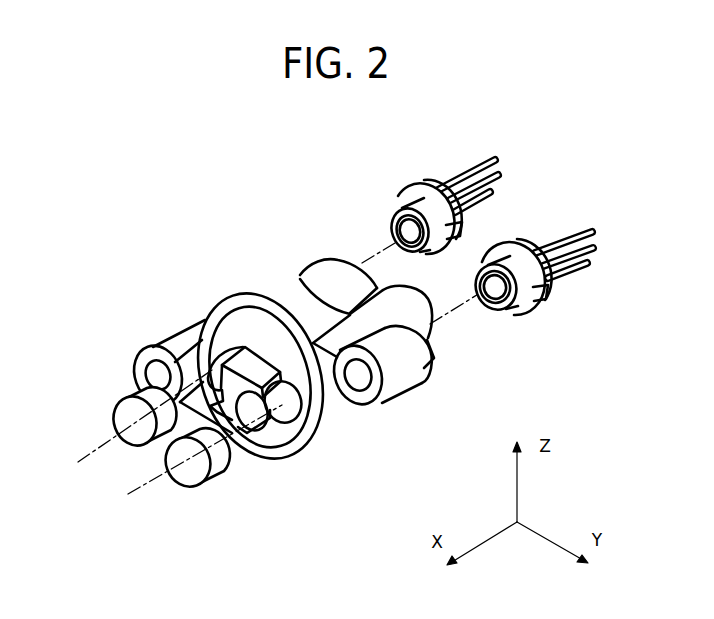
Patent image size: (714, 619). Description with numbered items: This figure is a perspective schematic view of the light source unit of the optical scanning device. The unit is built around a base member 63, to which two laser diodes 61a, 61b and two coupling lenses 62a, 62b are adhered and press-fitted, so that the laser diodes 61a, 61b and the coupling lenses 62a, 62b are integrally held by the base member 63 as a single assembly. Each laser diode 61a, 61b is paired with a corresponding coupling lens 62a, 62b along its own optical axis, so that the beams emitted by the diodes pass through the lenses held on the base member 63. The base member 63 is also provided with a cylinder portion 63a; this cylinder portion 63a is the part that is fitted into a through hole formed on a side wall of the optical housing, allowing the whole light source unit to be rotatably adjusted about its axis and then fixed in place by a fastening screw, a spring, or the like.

The laser diode 61a is at (520, 290).
The laser diode 61b is at (413, 207).
The coupling lens 62a is at (197, 477).
The coupling lens 62b is at (121, 412).
The base member 63 is at (387, 422).
The cylinder portion 63a is at (250, 320).